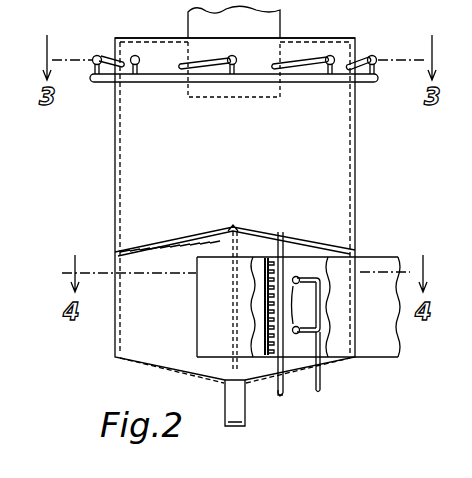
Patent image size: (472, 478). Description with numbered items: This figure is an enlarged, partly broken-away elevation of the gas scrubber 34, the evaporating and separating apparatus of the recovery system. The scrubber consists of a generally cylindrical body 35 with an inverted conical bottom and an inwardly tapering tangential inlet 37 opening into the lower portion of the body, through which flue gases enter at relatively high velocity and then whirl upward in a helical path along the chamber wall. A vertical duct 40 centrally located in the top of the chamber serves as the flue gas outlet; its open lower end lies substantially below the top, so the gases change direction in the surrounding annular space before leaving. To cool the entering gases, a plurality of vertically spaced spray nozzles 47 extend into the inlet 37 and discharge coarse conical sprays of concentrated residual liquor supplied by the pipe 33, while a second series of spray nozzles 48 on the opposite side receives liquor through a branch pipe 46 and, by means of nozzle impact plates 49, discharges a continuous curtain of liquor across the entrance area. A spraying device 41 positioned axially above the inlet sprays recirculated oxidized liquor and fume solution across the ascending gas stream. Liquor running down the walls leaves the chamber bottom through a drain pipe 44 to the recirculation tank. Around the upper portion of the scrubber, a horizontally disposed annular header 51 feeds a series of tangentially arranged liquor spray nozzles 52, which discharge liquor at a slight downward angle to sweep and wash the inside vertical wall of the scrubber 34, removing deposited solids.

The pipe 33 is at (322, 380).
The gas scrubber 34 is at (214, 165).
The cylindrical body 35 is at (356, 160).
The tangential inlet 37 is at (221, 298).
The vertical duct 40 is at (200, 98).
The spraying device 41 is at (232, 228).
The drain pipe 44 is at (247, 410).
The branch pipe 46 is at (283, 393).
The spray nozzles 47 is at (305, 305).
The spray nozzles 48 is at (275, 262).
The nozzle impact plates 49 is at (261, 257).
The annular header 51 is at (365, 82).
The liquor spray nozzles 52 is at (180, 66).